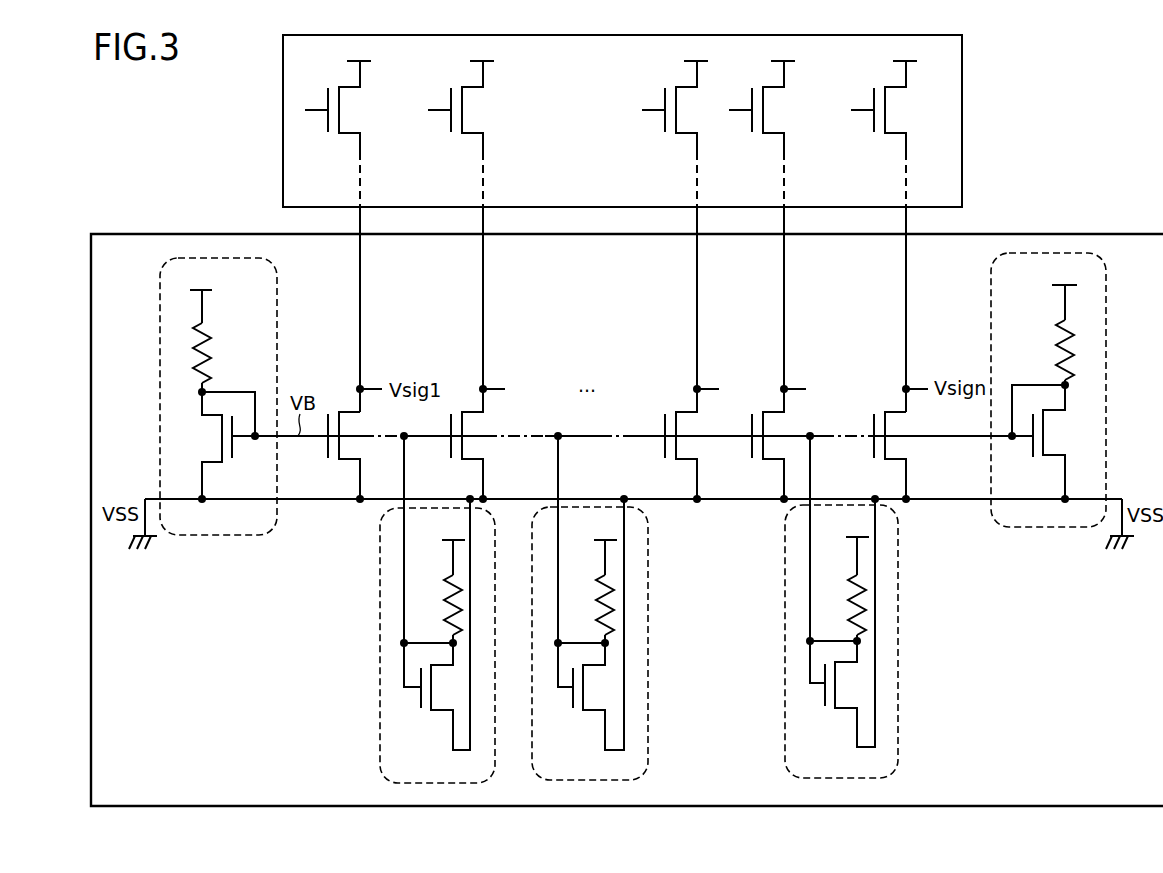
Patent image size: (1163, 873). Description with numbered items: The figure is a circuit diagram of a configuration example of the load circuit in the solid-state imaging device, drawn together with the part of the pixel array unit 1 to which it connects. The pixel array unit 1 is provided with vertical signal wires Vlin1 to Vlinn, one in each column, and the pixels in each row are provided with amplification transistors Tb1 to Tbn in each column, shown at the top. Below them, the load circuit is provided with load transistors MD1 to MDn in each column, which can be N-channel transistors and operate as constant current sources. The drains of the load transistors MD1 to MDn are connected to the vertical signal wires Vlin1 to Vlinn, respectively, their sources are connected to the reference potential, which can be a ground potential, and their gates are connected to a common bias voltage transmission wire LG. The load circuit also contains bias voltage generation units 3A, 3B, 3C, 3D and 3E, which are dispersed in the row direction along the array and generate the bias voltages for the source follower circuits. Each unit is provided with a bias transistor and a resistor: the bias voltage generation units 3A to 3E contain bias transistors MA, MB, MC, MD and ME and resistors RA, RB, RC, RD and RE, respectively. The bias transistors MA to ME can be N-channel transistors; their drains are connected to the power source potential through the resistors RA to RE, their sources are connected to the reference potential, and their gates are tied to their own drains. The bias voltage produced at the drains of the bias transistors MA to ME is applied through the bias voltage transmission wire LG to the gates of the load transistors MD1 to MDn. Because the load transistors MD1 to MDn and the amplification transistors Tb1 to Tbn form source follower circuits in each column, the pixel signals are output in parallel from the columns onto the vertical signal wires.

The pixel array unit 1 is at (962, 62).
The amplification transistor Tb1 is at (340, 108).
The amplification transistor Tbn is at (887, 108).
The bias voltage generation unit 3A is at (160, 326).
The bias voltage generation unit 3B is at (380, 724).
The bias voltage generation unit 3C is at (648, 722).
The bias voltage generation unit 3D is at (785, 722).
The bias voltage generation unit 3E is at (1108, 318).
The resistor RA is at (208, 340).
The resistor RB is at (451, 582).
The resistor RC is at (603, 582).
The resistor RD is at (855, 574).
The resistor RE is at (1058, 339).
The bias transistor MA is at (222, 438).
The bias transistor MB is at (430, 712).
The bias transistor MC is at (583, 712).
The bias transistor MD is at (835, 710).
The bias transistor ME is at (1045, 437).
The load transistor MD1 is at (339, 457).
The load transistor MDn is at (890, 447).
The bias voltage transmission wire LG is at (930, 419).
The vertical signal wire Vlin1 is at (358, 300).
The vertical signal wire Vlinn is at (906, 300).